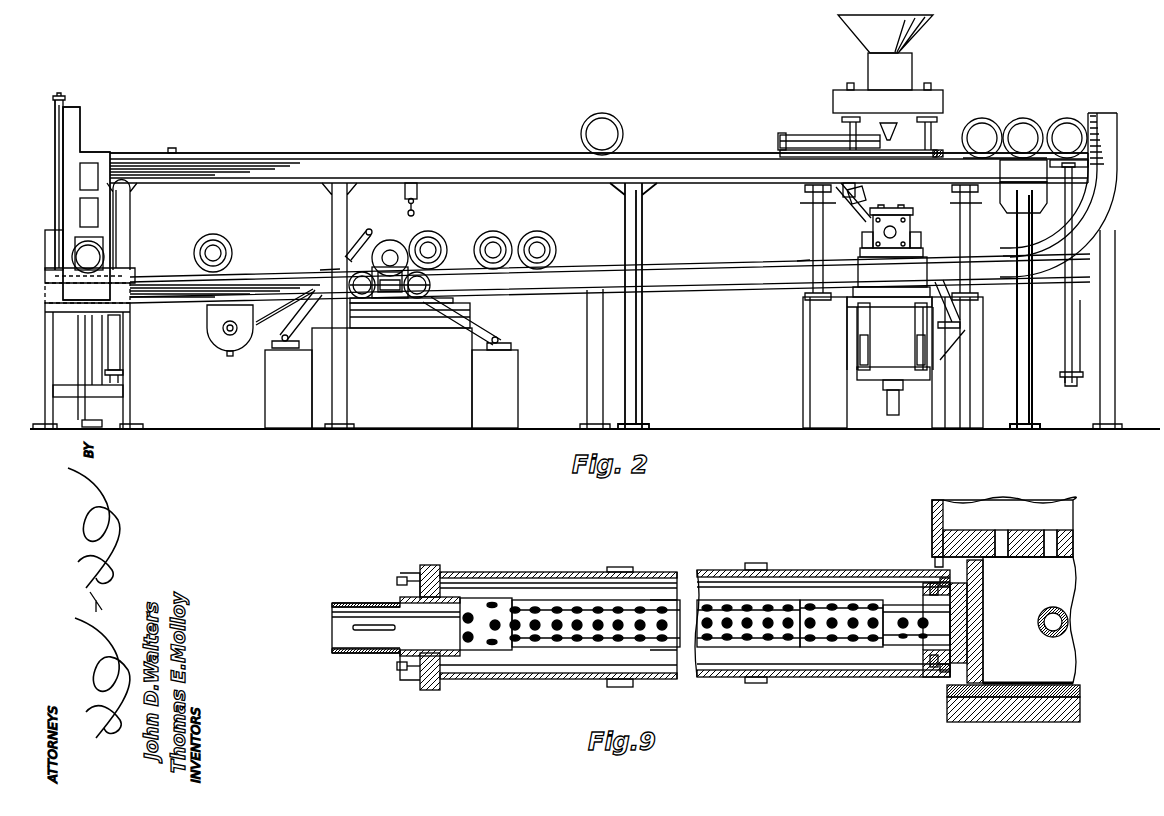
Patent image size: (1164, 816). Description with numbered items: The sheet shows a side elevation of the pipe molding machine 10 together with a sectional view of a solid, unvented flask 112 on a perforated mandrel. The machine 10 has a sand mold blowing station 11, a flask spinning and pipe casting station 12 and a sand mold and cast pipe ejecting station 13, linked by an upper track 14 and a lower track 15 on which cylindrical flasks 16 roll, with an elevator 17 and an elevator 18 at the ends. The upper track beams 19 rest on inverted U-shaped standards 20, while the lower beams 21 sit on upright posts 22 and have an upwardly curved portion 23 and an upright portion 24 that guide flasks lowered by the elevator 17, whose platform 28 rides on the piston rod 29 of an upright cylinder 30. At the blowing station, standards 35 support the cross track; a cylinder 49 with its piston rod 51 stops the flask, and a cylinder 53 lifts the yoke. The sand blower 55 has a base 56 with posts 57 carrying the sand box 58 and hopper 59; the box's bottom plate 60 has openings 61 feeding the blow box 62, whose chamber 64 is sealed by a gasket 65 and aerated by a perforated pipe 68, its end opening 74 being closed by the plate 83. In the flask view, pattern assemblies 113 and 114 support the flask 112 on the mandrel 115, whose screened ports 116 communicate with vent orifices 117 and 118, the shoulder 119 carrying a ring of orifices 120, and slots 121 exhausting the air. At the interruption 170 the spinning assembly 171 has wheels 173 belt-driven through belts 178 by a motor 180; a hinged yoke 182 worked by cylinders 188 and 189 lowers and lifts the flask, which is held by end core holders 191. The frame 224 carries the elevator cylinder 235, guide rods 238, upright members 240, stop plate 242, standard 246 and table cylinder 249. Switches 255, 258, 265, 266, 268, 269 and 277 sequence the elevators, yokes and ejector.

In FIG. 2, the pipe molding machine 10 is at (446, 153).
In FIG. 2, the sand mold blowing station 11 is at (912, 222).
In FIG. 2, the flask spinning and pipe casting station 12 is at (430, 282).
In FIG. 2, the sand mold and cast pipe ejecting station 13 is at (100, 248).
In FIG. 2, the upper track 14 is at (714, 183).
In FIG. 2, the lower track 15 is at (690, 288).
In FIG. 2, the cylindrical flask 16 is at (226, 244).
In FIG. 2, the elevator 17 is at (1088, 164).
In FIG. 2, the elevator 18 is at (55, 183).
In FIG. 2, the beams or rails 19 is at (272, 157).
In FIG. 2, the inverted U-shaped standards 20 is at (643, 236).
In FIG. 2, the beams or rails 21 is at (720, 263).
In FIG. 2, the upright posts 22 is at (589, 375).
In FIG. 2, the upwardly curved portion 23 is at (1105, 249).
In FIG. 2, the upright portion 24 is at (1118, 130).
In FIG. 2, the horizontal carriage or platform 28 is at (1046, 175).
In FIG. 2, the piston rod 29 is at (1064, 228).
In FIG. 2, the upright pressure fluid cylinder 30 is at (1065, 326).
In FIG. 2, the upright standards 35 is at (921, 403).
In FIG. 2, the pressure fluid cylinder 49 is at (856, 178).
In FIG. 2, the piston rod 51 is at (862, 203).
In FIG. 2, the pressure fluid cylinder 53 is at (944, 284).
In FIG. 2, the sand blower 55 is at (960, 228).
In FIG. 2, the base 56 is at (804, 352).
In FIG. 2, the upstanding posts 57 is at (824, 228).
In FIG. 2, the sand box 58 is at (938, 150).
In FIG. 9, the sand box 58 is at (932, 505).
In FIG. 2, the hopper 59 is at (930, 30).
In FIG. 9, the horizontal bottom plate 60 is at (974, 536).
In FIG. 9, the openings 61 is at (1036, 540).
In FIG. 9, the reciprocal blow box 62 is at (947, 702).
In FIG. 9, the chamber 64 is at (1003, 718).
In FIG. 9, the gasket 65 is at (1073, 557).
In FIG. 9, the horizontal perforated pipe 68 is at (1068, 617).
In FIG. 9, the circular opening 74 is at (983, 579).
In FIG. 9, the circular plate 83 is at (968, 606).
In FIG. 9, the unvented flask 112 is at (556, 572).
In FIG. 9, the pattern assembly 113 is at (924, 670).
In FIG. 9, the pattern assembly 114 is at (424, 564).
In FIG. 9, the modified mandrel 115 is at (650, 600).
In FIG. 9, the screened openings or ports 116 is at (720, 625).
In FIG. 9, the radial vent orifices 117 is at (808, 648).
In FIG. 9, the radial vent orifices 118 is at (470, 598).
In FIG. 9, the radial enlargement or shoulder 119 is at (925, 590).
In FIG. 9, the ring of vent orifices 120 is at (942, 580).
In FIG. 9, the elongated openings or slots 121 is at (372, 600).
In FIG. 2, the interrupted ends 170 is at (350, 283).
In FIG. 2, the flask spinning assembly 171 is at (416, 300).
In FIG. 2, the wheels 173 is at (364, 300).
In FIG. 2, the endless belts 178 is at (258, 340).
In FIG. 2, the motor 180 is at (212, 346).
In FIG. 2, the hinged yoke 182 is at (372, 229).
In FIG. 2, the pressure fluid cylinder 188 is at (302, 312).
In FIG. 2, the pressure fluid cylinder 189 is at (477, 312).
In FIG. 2, the end core holder 191 is at (388, 298).
In FIG. 2, the horizontal frame 224 is at (178, 398).
In FIG. 2, the upright pressure fluid cylinder 235 is at (78, 424).
In FIG. 2, the upright guide rods 238 is at (55, 138).
In FIG. 2, the upright members 240 is at (82, 116).
In FIG. 2, the upright bulkhead or stop plate 242 is at (45, 230).
In FIG. 2, the inverted U-shaped standard 246 is at (132, 196).
In FIG. 2, the pressure fluid cylinder 249 is at (121, 340).
In FIG. 2, the switch 255 is at (801, 255).
In FIG. 2, the switch 258 is at (1010, 252).
In FIG. 2, the switch 265 is at (414, 211).
In FIG. 2, the switch 266 is at (330, 268).
In FIG. 2, the switch 268 is at (137, 272).
In FIG. 2, the switch 269 is at (161, 271).
In FIG. 2, the switch 277 is at (172, 148).